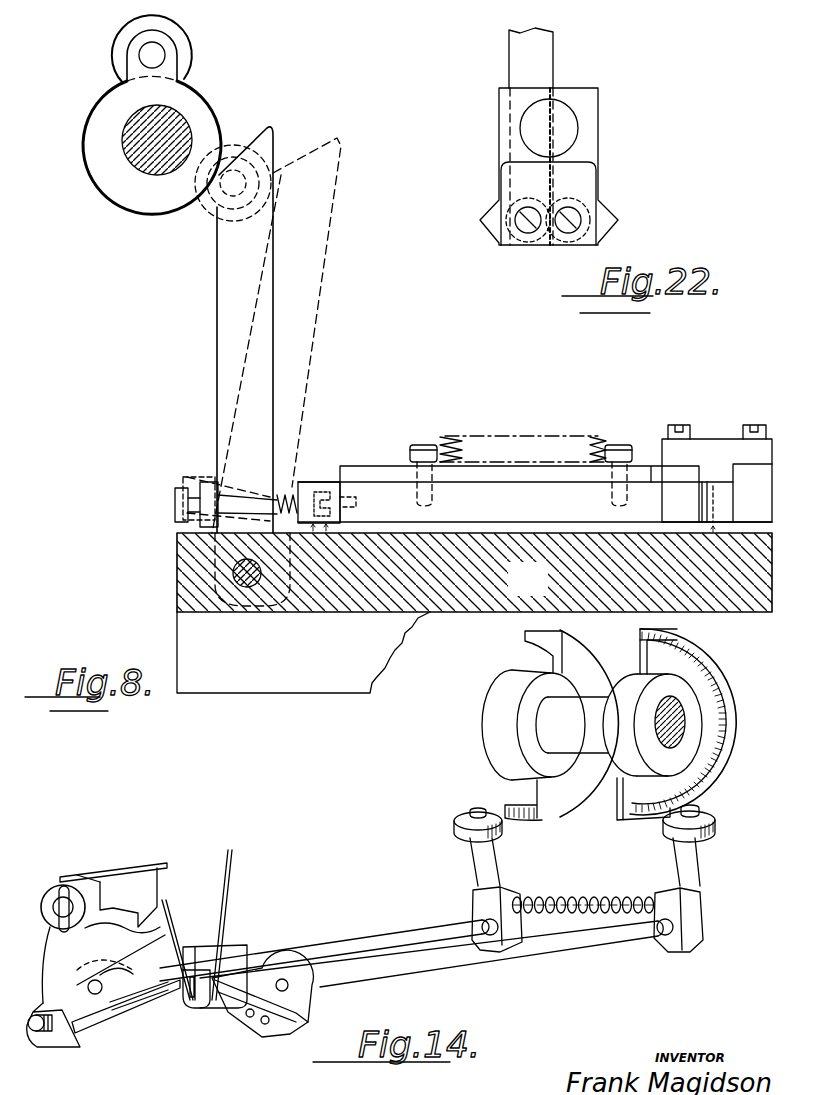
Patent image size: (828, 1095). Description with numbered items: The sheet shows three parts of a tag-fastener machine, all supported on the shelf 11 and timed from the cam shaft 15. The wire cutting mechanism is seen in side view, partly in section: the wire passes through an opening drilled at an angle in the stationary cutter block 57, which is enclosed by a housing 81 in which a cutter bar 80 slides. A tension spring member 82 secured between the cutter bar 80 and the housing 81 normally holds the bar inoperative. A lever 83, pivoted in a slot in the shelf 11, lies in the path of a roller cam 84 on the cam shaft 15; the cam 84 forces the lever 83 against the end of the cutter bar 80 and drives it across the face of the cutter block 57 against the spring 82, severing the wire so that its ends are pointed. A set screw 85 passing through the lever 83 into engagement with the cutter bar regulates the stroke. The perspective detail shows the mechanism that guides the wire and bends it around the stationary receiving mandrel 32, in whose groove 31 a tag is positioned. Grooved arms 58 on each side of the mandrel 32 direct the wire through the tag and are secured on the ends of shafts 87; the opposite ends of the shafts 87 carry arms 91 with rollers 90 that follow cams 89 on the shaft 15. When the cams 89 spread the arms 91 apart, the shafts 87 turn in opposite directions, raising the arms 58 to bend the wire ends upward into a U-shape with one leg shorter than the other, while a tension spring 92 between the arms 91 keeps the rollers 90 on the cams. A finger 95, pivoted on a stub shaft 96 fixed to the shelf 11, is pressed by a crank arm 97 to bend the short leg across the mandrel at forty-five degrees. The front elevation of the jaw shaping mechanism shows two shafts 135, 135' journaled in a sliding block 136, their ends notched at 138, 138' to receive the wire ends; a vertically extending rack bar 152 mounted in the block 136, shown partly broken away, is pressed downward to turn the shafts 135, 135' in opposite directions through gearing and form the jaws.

In FIG. 8, the shelf 11 is at (543, 592).
In FIG. 8, the cam shaft 15 is at (143, 165).
In FIG. 14, the cam shaft 15 is at (585, 736).
In FIG. 14, the groove 31 is at (194, 1002).
In FIG. 14, the stationary receiving mandrel 32 is at (188, 948).
In FIG. 8, the cutter block 57 is at (728, 504).
In FIG. 14, the grooved arms 58 is at (108, 1020).
In FIG. 8, the cutter bar 80 is at (308, 484).
In FIG. 8, the housing 81 is at (353, 465).
In FIG. 8, the tension spring member 82 is at (512, 441).
In FIG. 8, the lever 83 is at (217, 352).
In FIG. 8, the roller cam 84 is at (108, 165).
In FIG. 8, the set screw 85 is at (177, 501).
In FIG. 14, the shafts 87 is at (374, 970).
In FIG. 14, the cams 89 is at (592, 662).
In FIG. 14, the rollers 90 is at (454, 830).
In FIG. 14, the arms 91 is at (488, 866).
In FIG. 14, the tension spring 92 is at (568, 900).
In FIG. 14, the finger 95 is at (58, 962).
In FIG. 14, the stub shaft 96 is at (33, 1034).
In FIG. 14, the crank arm 97 is at (135, 882).
In FIG. 22, the shaft 135 is at (567, 245).
In FIG. 22, the shaft 135' is at (520, 248).
In FIG. 22, the block 136 is at (612, 220).
In FIG. 22, the notch 138 is at (606, 202).
In FIG. 22, the notch 138' is at (495, 211).
In FIG. 22, the rack bar 152 is at (545, 59).